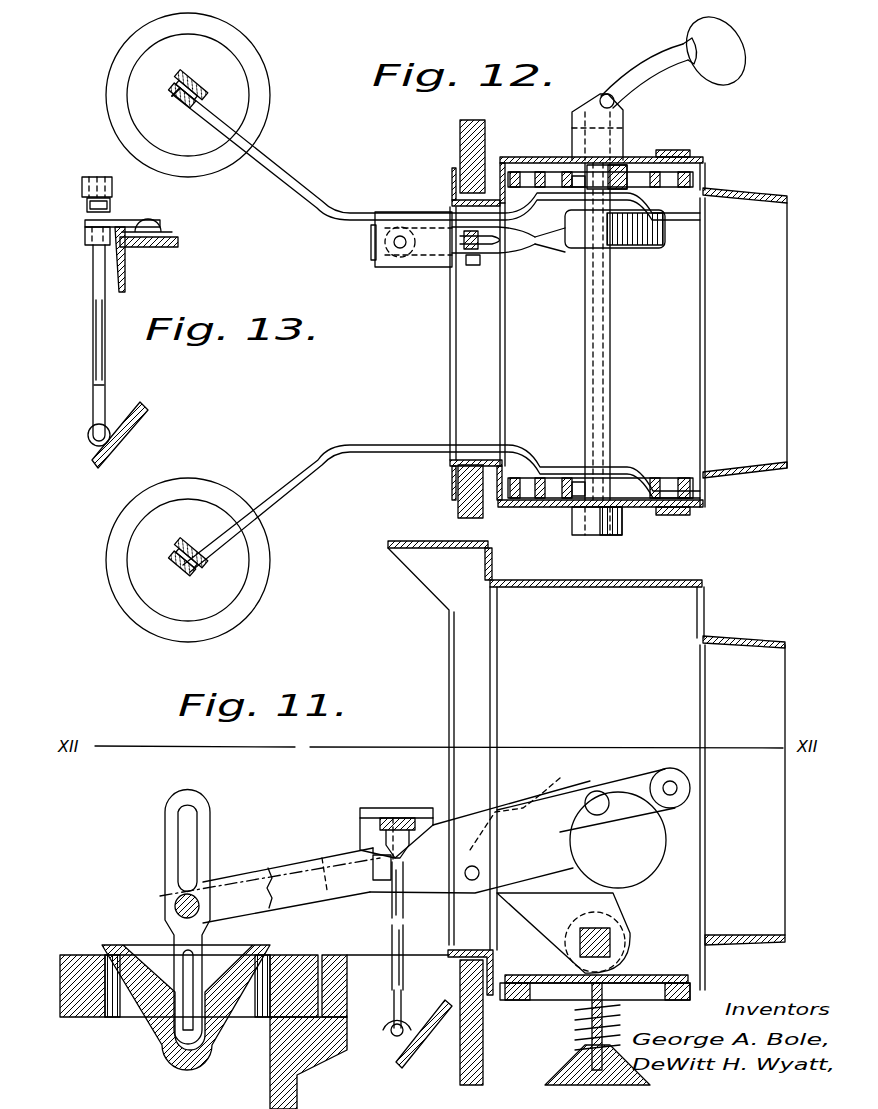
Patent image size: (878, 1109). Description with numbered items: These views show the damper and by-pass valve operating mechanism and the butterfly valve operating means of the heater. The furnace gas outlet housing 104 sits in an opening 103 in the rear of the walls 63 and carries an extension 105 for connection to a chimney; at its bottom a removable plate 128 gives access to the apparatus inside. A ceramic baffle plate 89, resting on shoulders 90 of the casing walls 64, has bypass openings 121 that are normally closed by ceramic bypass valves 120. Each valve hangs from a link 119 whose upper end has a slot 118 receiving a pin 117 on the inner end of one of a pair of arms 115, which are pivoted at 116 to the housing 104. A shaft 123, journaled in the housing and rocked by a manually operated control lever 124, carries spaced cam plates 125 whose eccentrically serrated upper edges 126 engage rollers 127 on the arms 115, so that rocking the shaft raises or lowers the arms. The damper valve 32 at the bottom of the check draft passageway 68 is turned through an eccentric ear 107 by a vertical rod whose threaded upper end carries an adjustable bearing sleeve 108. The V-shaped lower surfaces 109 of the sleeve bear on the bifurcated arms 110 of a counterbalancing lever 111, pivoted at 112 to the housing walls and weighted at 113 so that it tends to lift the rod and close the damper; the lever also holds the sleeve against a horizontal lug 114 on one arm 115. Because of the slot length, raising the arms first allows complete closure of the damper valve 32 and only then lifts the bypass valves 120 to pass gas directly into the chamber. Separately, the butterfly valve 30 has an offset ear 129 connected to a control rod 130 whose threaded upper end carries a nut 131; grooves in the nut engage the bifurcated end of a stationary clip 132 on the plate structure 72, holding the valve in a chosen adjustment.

In FIG. 13, the butterfly valve 30 is at (122, 422).
In FIG. 11, the damper valve 32 is at (424, 1034).
In FIG. 12, the walls 63 is at (455, 503).
In FIG. 11, the walls 63 is at (470, 1078).
In FIG. 11, the casing walls 64 is at (272, 1085).
In FIG. 11, the check draft passageway 68 is at (378, 1078).
In FIG. 13, the plate structure 72 is at (179, 243).
In FIG. 11, the ceramic baffle plate 89 is at (90, 1015).
In FIG. 11, the shoulders 90 is at (270, 1040).
In FIG. 12, the opening 103 is at (460, 160).
In FIG. 12, the furnace gas outlet housing 104 is at (705, 493).
In FIG. 11, the furnace gas outlet housing 104 is at (705, 590).
In FIG. 12, the extension 105 is at (735, 199).
In FIG. 11, the extension 105 is at (733, 648).
In FIG. 11, the eccentric ear 107 is at (393, 1038).
In FIG. 11, the adjustable bearing sleeve 108 is at (405, 818).
In FIG. 11, the V-shaped lower surfaces 109 is at (385, 852).
In FIG. 12, the bifurcated arms 110 is at (462, 268).
In FIG. 11, the bifurcated arms 110 is at (388, 882).
In FIG. 12, the counterbalancing lever 111 is at (565, 232).
In FIG. 11, the counterbalancing lever 111 is at (465, 835).
In FIG. 12, the pivot 112 is at (490, 262).
In FIG. 11, the pivot 112 is at (480, 873).
In FIG. 12, the weight 113 is at (650, 236).
In FIG. 11, the weight 113 is at (650, 848).
In FIG. 12, the lug 114 is at (403, 258).
In FIG. 11, the lug 114 is at (378, 800).
In FIG. 12, the arms 115 is at (335, 222).
In FIG. 11, the arms 115 is at (290, 858).
In FIG. 12, the pivot 116 is at (690, 153).
In FIG. 11, the pivot 116 is at (678, 788).
In FIG. 12, the pins 117 is at (172, 100).
In FIG. 11, the pins 117 is at (175, 905).
In FIG. 11, the slots 118 is at (183, 853).
In FIG. 12, the links 119 is at (205, 96).
In FIG. 11, the links 119 is at (200, 810).
In FIG. 12, the ceramic bypass valves 120 is at (218, 128).
In FIG. 11, the ceramic bypass valves 120 is at (172, 1055).
In FIG. 11, the bypass openings 121 is at (128, 1010).
In FIG. 12, the shaft 123 is at (600, 343).
In FIG. 11, the shaft 123 is at (612, 942).
In FIG. 12, the manually operated control lever 124 is at (632, 70).
In FIG. 12, the cam plates 125 is at (525, 180).
In FIG. 11, the cam plates 125 is at (622, 893).
In FIG. 12, the eccentrically serrated upper edges 126 is at (575, 180).
In FIG. 11, the eccentrically serrated upper edges 126 is at (548, 790).
In FIG. 12, the rollers 127 is at (605, 178).
In FIG. 11, the rollers 127 is at (645, 767).
In FIG. 11, the removable plate 128 is at (690, 980).
In FIG. 13, the offset ear 129 is at (105, 425).
In FIG. 13, the control rod 130 is at (106, 372).
In FIG. 13, the nut 131 is at (112, 212).
In FIG. 13, the clip 132 is at (145, 230).